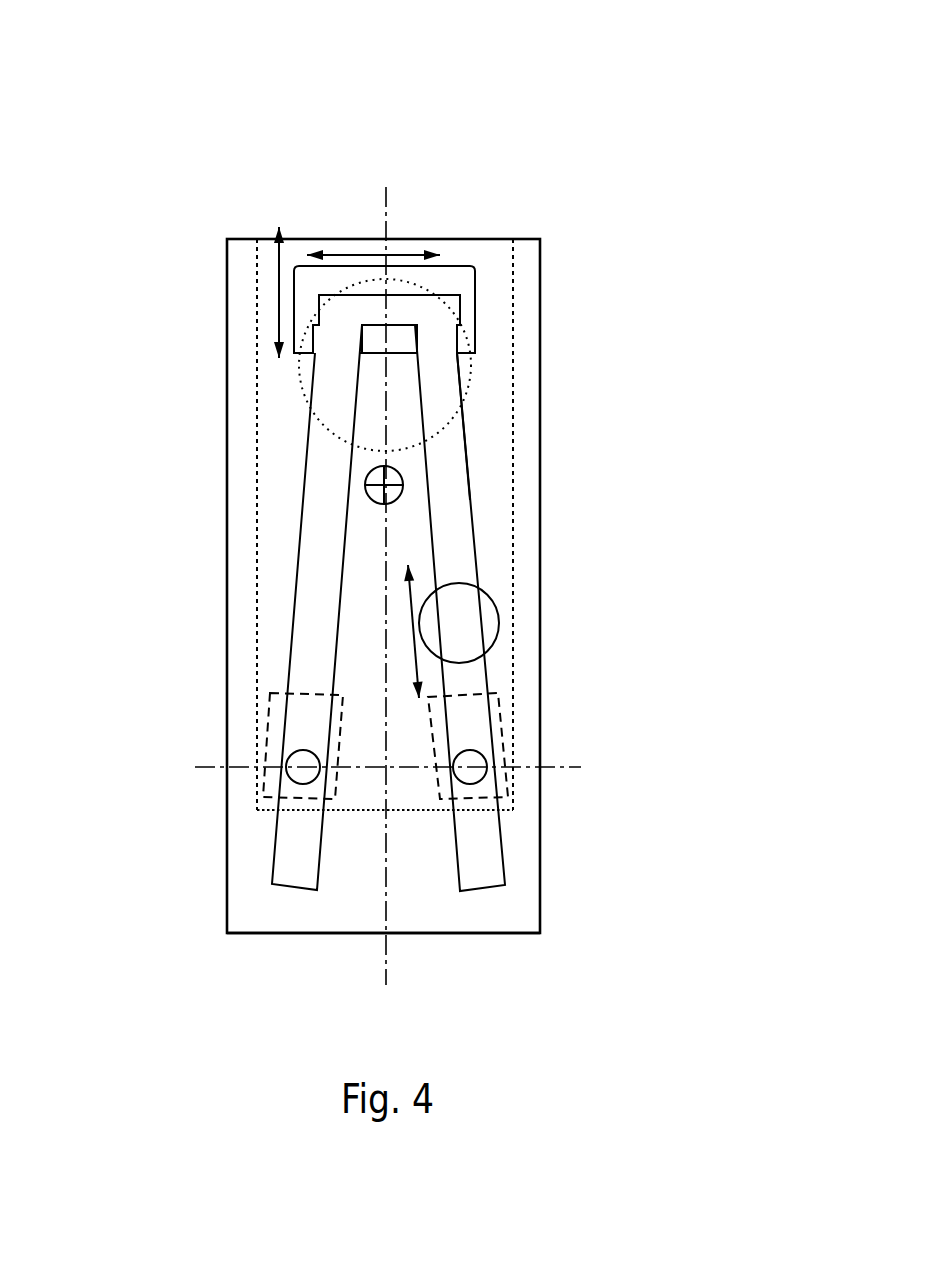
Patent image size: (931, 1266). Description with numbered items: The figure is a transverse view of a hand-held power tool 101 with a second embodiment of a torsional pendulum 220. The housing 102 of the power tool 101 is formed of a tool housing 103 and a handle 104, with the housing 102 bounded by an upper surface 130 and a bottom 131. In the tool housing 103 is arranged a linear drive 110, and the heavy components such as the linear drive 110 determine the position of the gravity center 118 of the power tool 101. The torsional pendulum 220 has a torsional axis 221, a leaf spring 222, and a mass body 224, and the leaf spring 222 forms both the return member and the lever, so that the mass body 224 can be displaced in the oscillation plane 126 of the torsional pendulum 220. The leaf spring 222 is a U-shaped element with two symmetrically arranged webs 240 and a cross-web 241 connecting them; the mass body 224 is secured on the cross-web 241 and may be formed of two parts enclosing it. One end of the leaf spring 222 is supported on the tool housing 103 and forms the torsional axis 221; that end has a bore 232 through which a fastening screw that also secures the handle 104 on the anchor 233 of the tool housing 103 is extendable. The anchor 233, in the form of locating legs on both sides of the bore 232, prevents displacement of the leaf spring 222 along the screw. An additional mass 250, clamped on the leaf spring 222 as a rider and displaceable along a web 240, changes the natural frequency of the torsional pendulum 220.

The hand-held power tool 101 is at (140, 187).
The housing 102 is at (597, 103).
The tool housing 103 is at (525, 248).
The handle 104 is at (465, 252).
The linear drive 110 is at (358, 283).
The gravity center 118 is at (377, 496).
The oscillation plane 126 is at (383, 550).
The upper surface 130 is at (405, 238).
The bottom 131 is at (472, 931).
The torsional pendulum 220 is at (748, 385).
The torsional axis 221 is at (572, 767).
The leaf spring 222 is at (465, 398).
The mass body 224 is at (467, 297).
The bore 232 is at (297, 773).
The anchor 233 is at (277, 717).
The webs 240 is at (323, 453).
The cross-web 241 is at (387, 310).
The additional mass 250 is at (463, 623).